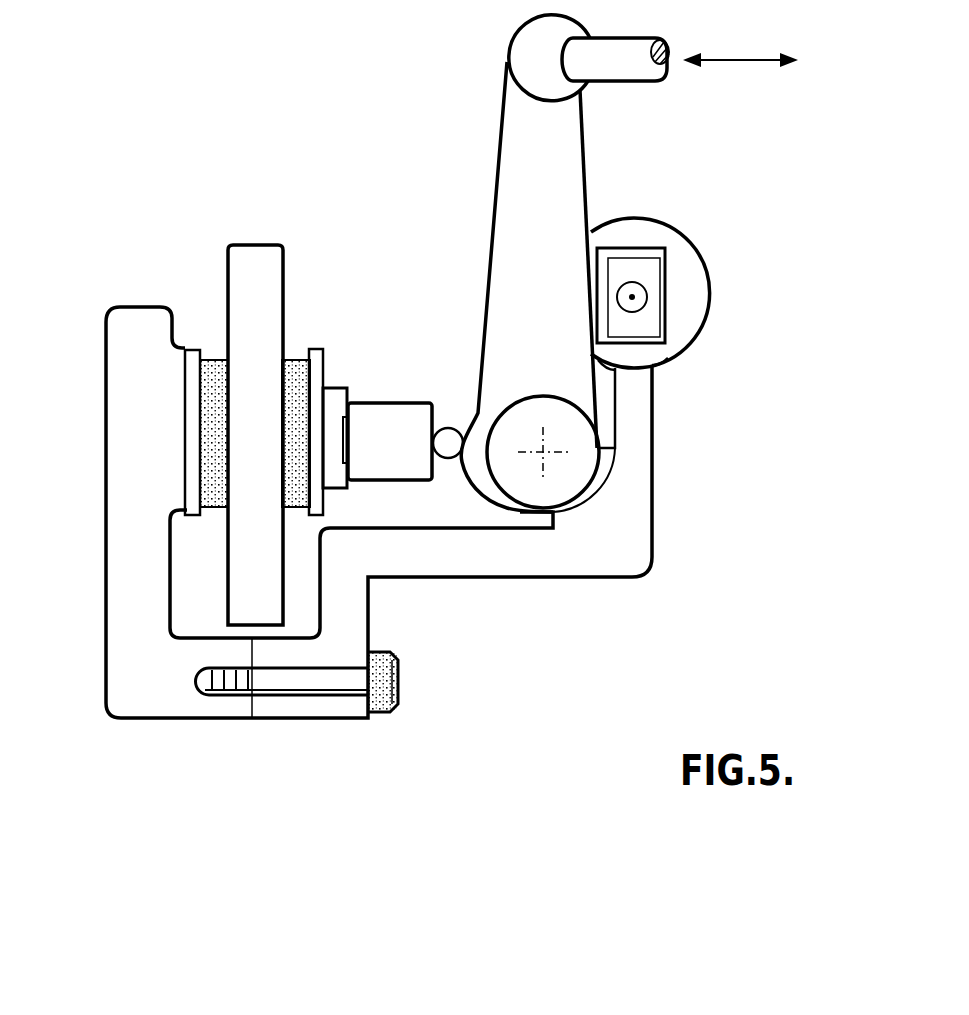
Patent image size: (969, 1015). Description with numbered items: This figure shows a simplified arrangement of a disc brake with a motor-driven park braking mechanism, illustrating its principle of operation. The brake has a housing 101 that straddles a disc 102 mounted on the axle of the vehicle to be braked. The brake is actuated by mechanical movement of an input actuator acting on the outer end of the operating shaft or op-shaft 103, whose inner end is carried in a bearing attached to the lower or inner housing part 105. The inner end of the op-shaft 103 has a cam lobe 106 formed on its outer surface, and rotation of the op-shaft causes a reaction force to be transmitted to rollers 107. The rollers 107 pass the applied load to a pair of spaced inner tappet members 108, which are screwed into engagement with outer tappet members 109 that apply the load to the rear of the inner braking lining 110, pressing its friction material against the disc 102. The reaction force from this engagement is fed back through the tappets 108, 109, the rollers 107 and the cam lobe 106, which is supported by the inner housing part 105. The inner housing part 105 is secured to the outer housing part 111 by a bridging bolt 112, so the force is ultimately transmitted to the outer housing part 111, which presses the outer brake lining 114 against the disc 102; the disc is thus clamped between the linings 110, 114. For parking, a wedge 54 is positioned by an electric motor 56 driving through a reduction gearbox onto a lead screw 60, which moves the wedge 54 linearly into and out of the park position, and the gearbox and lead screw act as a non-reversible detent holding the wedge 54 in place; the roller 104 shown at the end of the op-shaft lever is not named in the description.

The housing 101 is at (373, 745).
The disc 102 is at (252, 265).
The operating shaft 103 is at (557, 145).
The roller 104 is at (598, 482).
The inner housing part 105 is at (632, 550).
The cam lobe 106 is at (482, 393).
The rollers 107 is at (452, 455).
The inner tappet members 108 is at (402, 423).
The outer tappet members 109 is at (333, 427).
The inner braking lining 110 is at (287, 367).
The outer housing part 111 is at (122, 692).
The bridging bolt 112 is at (398, 680).
The outer brake lining 114 is at (218, 368).
The wedge 54 is at (655, 325).
The electric motor 56 is at (680, 232).
The lead screw 60 is at (647, 296).